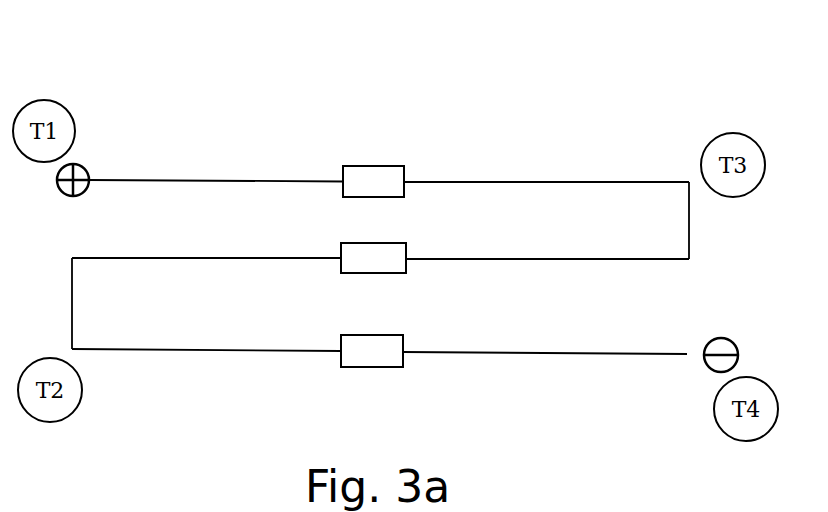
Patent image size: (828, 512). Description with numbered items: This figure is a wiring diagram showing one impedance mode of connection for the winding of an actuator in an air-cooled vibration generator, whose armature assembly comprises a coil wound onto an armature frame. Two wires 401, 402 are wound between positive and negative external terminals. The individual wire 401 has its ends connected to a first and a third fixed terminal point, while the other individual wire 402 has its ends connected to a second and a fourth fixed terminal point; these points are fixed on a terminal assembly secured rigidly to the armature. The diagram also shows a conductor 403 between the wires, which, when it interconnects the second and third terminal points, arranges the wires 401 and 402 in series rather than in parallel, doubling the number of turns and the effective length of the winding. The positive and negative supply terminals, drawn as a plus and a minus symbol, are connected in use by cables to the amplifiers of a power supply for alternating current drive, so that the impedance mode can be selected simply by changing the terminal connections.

The wire 401 is at (389, 182).
The wire 402 is at (379, 351).
The conductor 403 is at (380, 258).